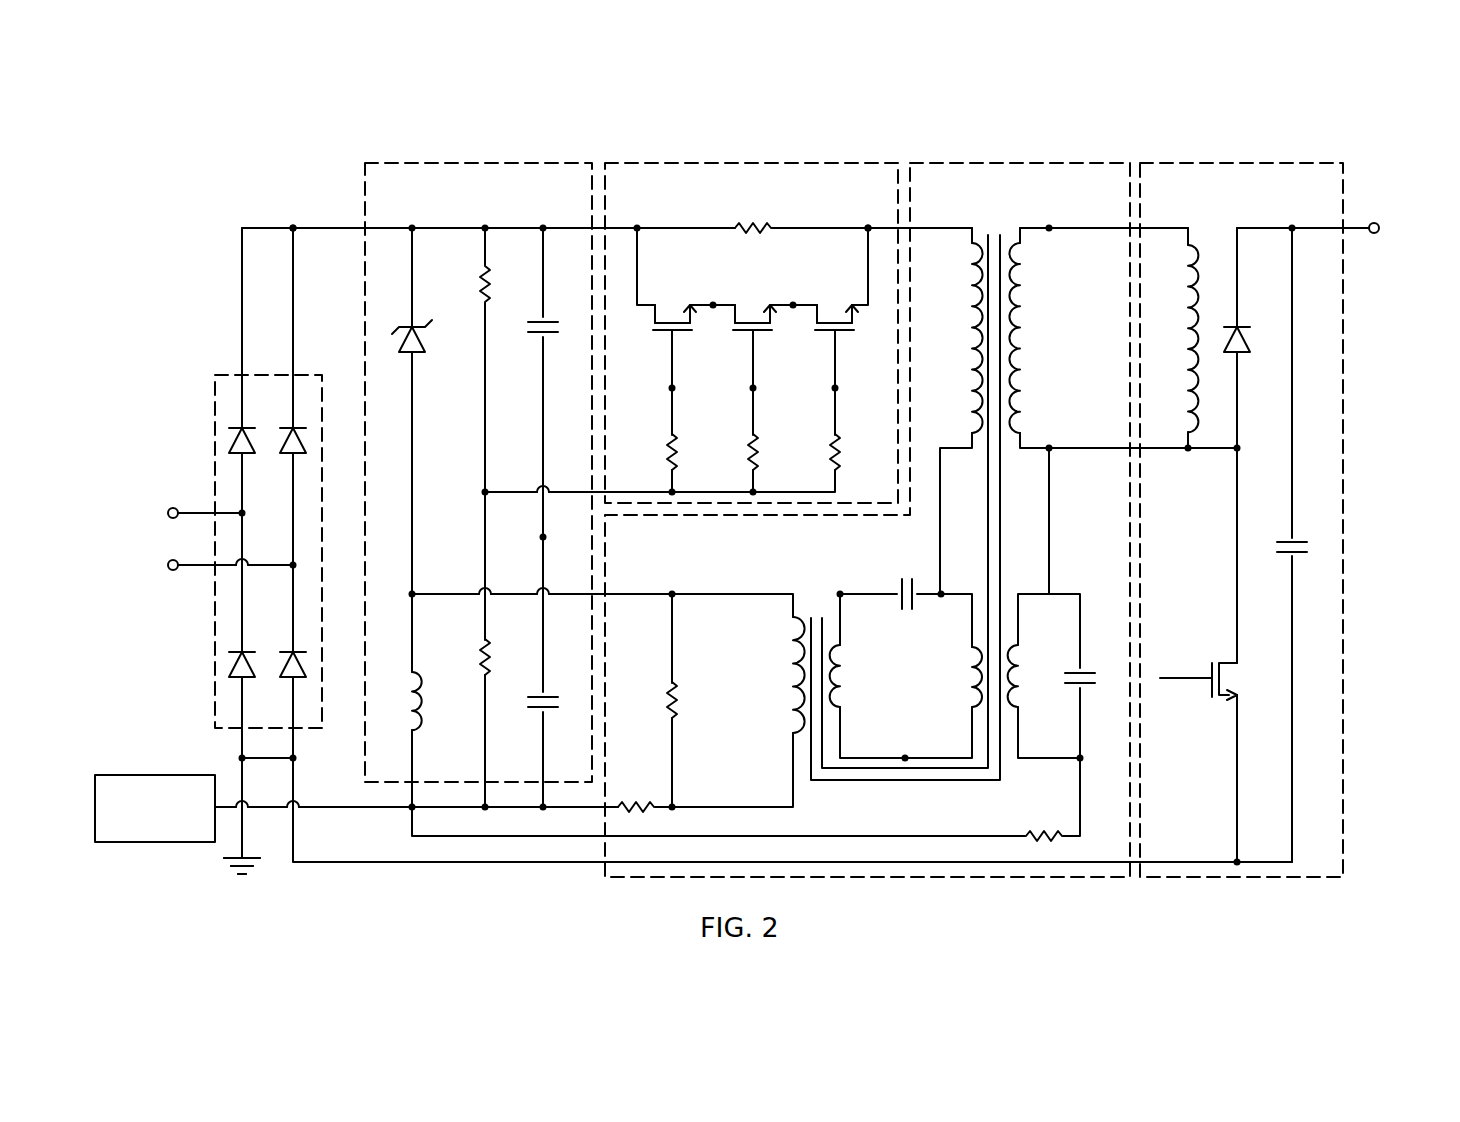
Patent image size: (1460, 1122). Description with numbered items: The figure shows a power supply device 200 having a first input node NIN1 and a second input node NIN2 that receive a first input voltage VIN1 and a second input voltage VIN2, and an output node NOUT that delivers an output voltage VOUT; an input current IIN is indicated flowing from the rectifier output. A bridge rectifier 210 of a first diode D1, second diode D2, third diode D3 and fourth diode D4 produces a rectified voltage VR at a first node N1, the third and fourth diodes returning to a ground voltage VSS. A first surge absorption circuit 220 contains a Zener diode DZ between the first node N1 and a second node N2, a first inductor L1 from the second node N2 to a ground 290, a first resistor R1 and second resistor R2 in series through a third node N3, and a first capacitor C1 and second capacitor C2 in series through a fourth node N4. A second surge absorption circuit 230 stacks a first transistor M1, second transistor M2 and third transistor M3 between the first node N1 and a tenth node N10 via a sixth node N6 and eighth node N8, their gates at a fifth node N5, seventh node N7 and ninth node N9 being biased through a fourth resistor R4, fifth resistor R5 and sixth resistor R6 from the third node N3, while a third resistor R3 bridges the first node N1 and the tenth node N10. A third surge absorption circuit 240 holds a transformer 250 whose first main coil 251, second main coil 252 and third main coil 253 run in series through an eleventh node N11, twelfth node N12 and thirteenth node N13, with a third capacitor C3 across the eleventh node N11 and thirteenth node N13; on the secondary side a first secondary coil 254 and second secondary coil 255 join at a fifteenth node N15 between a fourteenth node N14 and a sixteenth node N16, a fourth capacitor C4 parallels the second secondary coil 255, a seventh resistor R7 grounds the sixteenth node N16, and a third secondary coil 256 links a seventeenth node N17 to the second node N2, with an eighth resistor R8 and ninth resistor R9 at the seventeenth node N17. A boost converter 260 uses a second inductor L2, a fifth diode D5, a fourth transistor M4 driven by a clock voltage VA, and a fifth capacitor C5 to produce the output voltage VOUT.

The power supply device 200 is at (322, 124).
The bridge rectifier 210 is at (218, 372).
The first surge absorption circuit 220 is at (367, 163).
The second surge absorption circuit 230 is at (607, 163).
The third surge absorption circuit 240 is at (912, 163).
The transformer 250 is at (157, 95).
The first main coil 251 is at (968, 362).
The second main coil 252 is at (968, 686).
The third main coil 253 is at (844, 671).
The first secondary coil 254 is at (1024, 362).
The second secondary coil 255 is at (1020, 671).
The third secondary coil 256 is at (791, 677).
The boost converter 260 is at (1142, 163).
The ground 290 is at (152, 773).
The first diode D1 is at (244, 455).
The second diode D2 is at (290, 425).
The third diode D3 is at (244, 678).
The fourth diode D4 is at (290, 650).
The fifth diode D5 is at (1240, 320).
The Zener diode DZ is at (420, 322).
The first resistor R1 is at (492, 290).
The second resistor R2 is at (493, 662).
The third resistor R3 is at (746, 222).
The fourth resistor R4 is at (680, 462).
The fifth resistor R5 is at (762, 462).
The sixth resistor R6 is at (844, 462).
The seventh resistor R7 is at (1026, 830).
The eighth resistor R8 is at (637, 802).
The ninth resistor R9 is at (680, 698).
The first capacitor C1 is at (550, 338).
The second capacitor C2 is at (550, 715).
The third capacitor C3 is at (904, 578).
The fourth capacitor C4 is at (1084, 690).
The fifth capacitor C5 is at (1297, 557).
The first inductor L1 is at (410, 700).
The second inductor L2 is at (1188, 364).
The first transistor M1 is at (671, 301).
The second transistor M2 is at (751, 301).
The third transistor M3 is at (833, 301).
The fourth transistor M4 is at (1235, 661).
The first node N1 is at (290, 225).
The second node N2 is at (414, 592).
The third node N3 is at (483, 492).
The fourth node N4 is at (542, 537).
The fifth node N5 is at (675, 388).
The sixth node N6 is at (713, 309).
The seventh node N7 is at (756, 388).
The eighth node N8 is at (793, 309).
The ninth node N9 is at (838, 388).
The tenth node N10 is at (867, 225).
The eleventh node N11 is at (941, 598).
The twelfth node N12 is at (905, 755).
The thirteenth node N13 is at (840, 591).
The fourteenth node N14 is at (1049, 225).
The fifteenth node N15 is at (1049, 444).
The sixteenth node N16 is at (1078, 760).
The seventeenth node N17 is at (674, 804).
The first input voltage VIN1 is at (205, 498).
The second input voltage VIN2 is at (205, 578).
The first input node NIN1 is at (169, 510).
The second input node NIN2 is at (194, 568).
The rectified voltage VR is at (352, 218).
The input current IIN is at (352, 240).
The output voltage VOUT is at (1387, 211).
The output node NOUT is at (1376, 234).
The clock voltage VA is at (1197, 692).
The ground voltage VSS is at (238, 888).